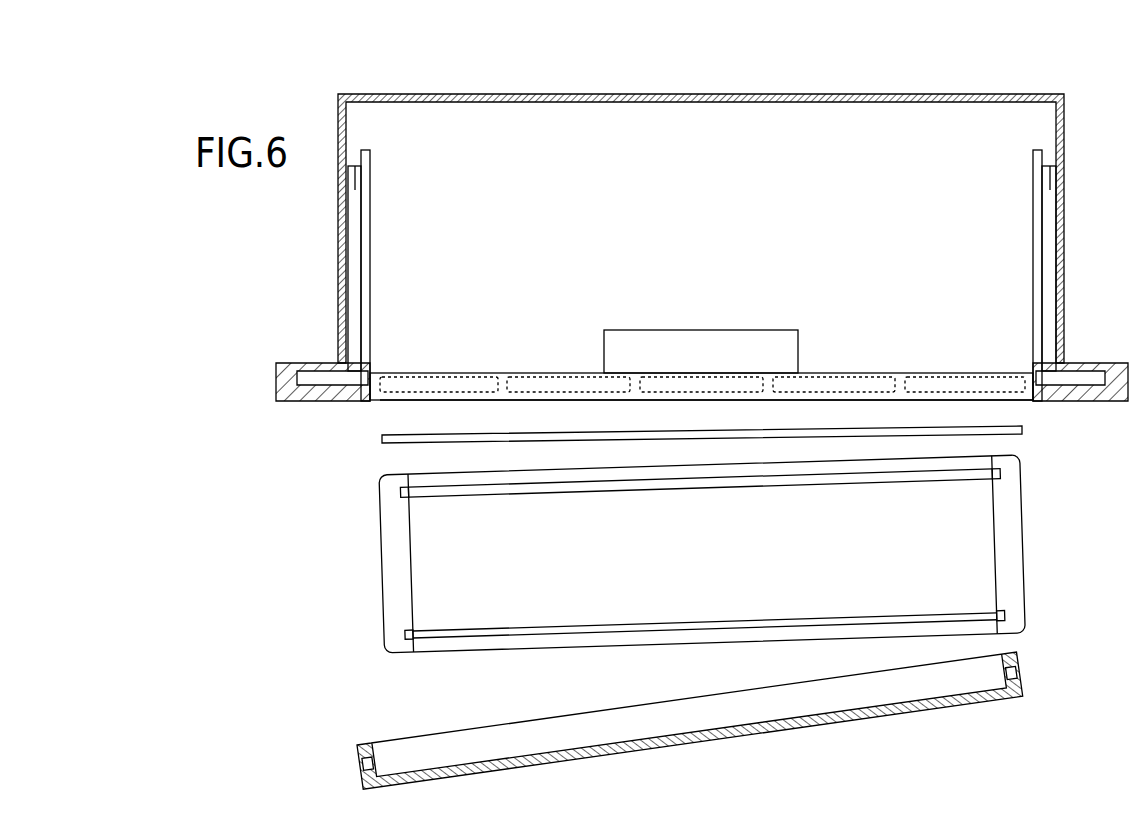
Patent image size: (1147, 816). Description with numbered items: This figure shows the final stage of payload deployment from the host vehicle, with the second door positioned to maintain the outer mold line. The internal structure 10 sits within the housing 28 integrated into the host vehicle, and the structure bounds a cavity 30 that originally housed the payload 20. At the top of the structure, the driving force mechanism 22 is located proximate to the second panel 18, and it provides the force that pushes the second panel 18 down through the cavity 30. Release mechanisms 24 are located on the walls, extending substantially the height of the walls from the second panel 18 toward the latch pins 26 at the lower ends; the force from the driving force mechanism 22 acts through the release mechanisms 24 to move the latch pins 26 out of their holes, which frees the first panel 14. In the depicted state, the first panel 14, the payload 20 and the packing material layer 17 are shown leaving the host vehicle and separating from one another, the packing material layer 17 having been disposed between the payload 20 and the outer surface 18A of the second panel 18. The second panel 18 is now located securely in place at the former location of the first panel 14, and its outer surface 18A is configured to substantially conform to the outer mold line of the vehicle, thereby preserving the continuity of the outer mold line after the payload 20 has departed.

The internal structure 10 is at (717, 66).
The first panel 14 is at (485, 752).
The packing material layer 17 is at (393, 443).
The second panel 18 is at (450, 373).
The outer surface of second panel 18A is at (450, 402).
The payload 20 is at (717, 573).
The driving force mechanism 22 is at (745, 340).
The release mechanism 24 is at (348, 228).
The latch pins 26 is at (285, 363).
The housing 28 is at (890, 94).
The cavity 30 is at (717, 231).